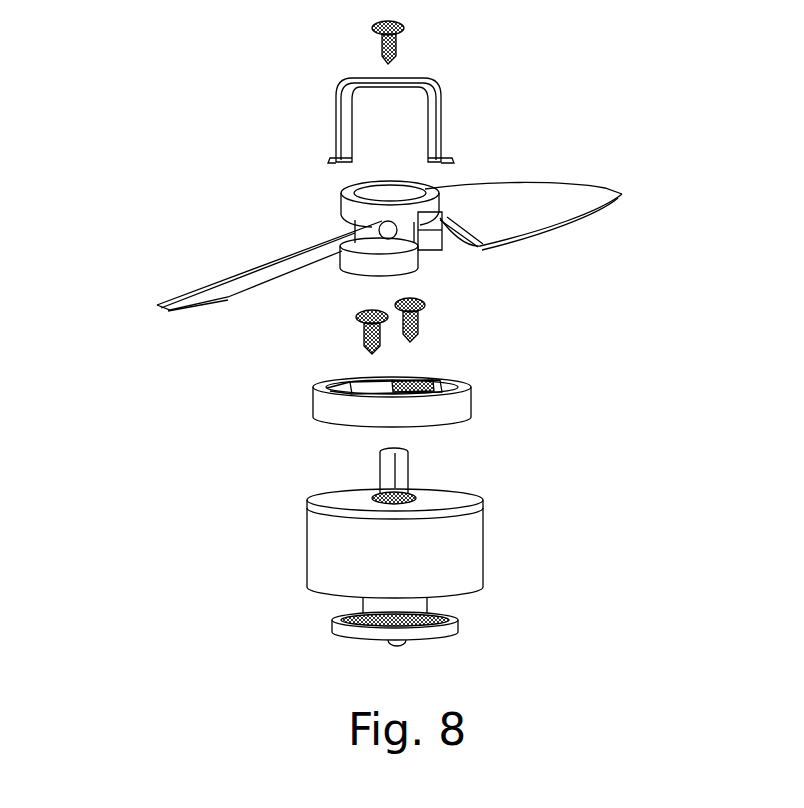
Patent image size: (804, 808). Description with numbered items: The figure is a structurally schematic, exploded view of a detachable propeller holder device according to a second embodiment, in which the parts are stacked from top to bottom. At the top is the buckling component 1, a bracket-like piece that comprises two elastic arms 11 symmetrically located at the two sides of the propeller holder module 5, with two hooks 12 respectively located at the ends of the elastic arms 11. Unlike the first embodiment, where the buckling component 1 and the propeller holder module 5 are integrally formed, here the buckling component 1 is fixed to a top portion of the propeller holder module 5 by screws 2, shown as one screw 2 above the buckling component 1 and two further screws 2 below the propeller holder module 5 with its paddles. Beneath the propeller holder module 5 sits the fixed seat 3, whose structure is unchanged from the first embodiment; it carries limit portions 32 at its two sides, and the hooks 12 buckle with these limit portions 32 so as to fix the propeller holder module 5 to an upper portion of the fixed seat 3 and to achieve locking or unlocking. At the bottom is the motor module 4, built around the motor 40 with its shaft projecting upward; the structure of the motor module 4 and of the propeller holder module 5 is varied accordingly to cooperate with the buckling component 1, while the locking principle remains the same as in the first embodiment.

The buckling component 1 is at (338, 80).
The elastic arm 11 is at (338, 128).
The hook 12 is at (330, 157).
The screw 2 is at (400, 45).
The propeller holder module 5 is at (357, 257).
The fixed seat 3 is at (330, 405).
The limit portion 32 is at (470, 390).
The motor module 4 is at (492, 515).
The motor 40 is at (330, 555).